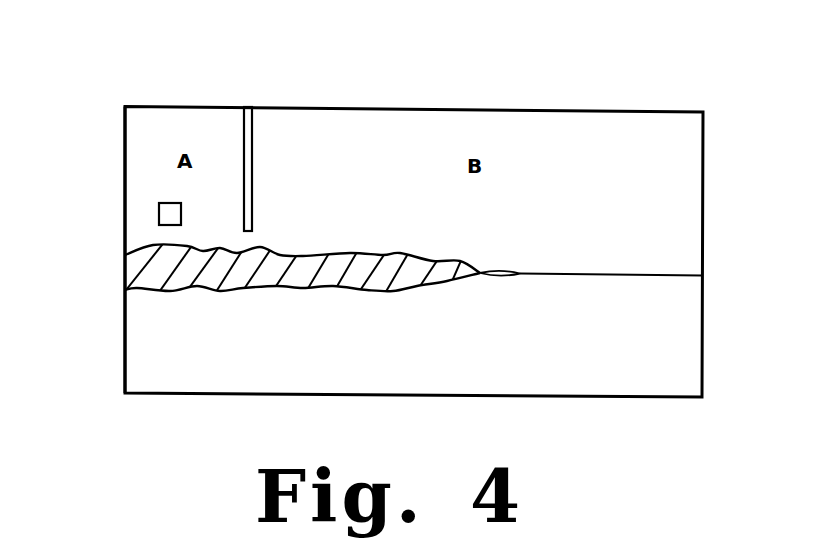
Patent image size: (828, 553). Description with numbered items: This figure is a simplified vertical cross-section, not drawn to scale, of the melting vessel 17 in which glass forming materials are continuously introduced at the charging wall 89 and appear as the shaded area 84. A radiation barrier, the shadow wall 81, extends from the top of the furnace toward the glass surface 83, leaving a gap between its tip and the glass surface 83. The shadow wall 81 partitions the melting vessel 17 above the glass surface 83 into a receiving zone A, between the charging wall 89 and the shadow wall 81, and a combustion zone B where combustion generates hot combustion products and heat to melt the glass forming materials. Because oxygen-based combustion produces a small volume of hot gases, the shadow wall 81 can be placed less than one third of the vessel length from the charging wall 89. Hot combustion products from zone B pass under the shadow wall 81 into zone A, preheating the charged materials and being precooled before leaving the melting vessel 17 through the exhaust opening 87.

The melting vessel 17 is at (535, 88).
The shadow wall 81 is at (252, 107).
The glass surface 83 is at (462, 260).
The shaded area 84 is at (160, 269).
The exhaust opening 87 is at (160, 216).
The charging wall 89 is at (125, 153).